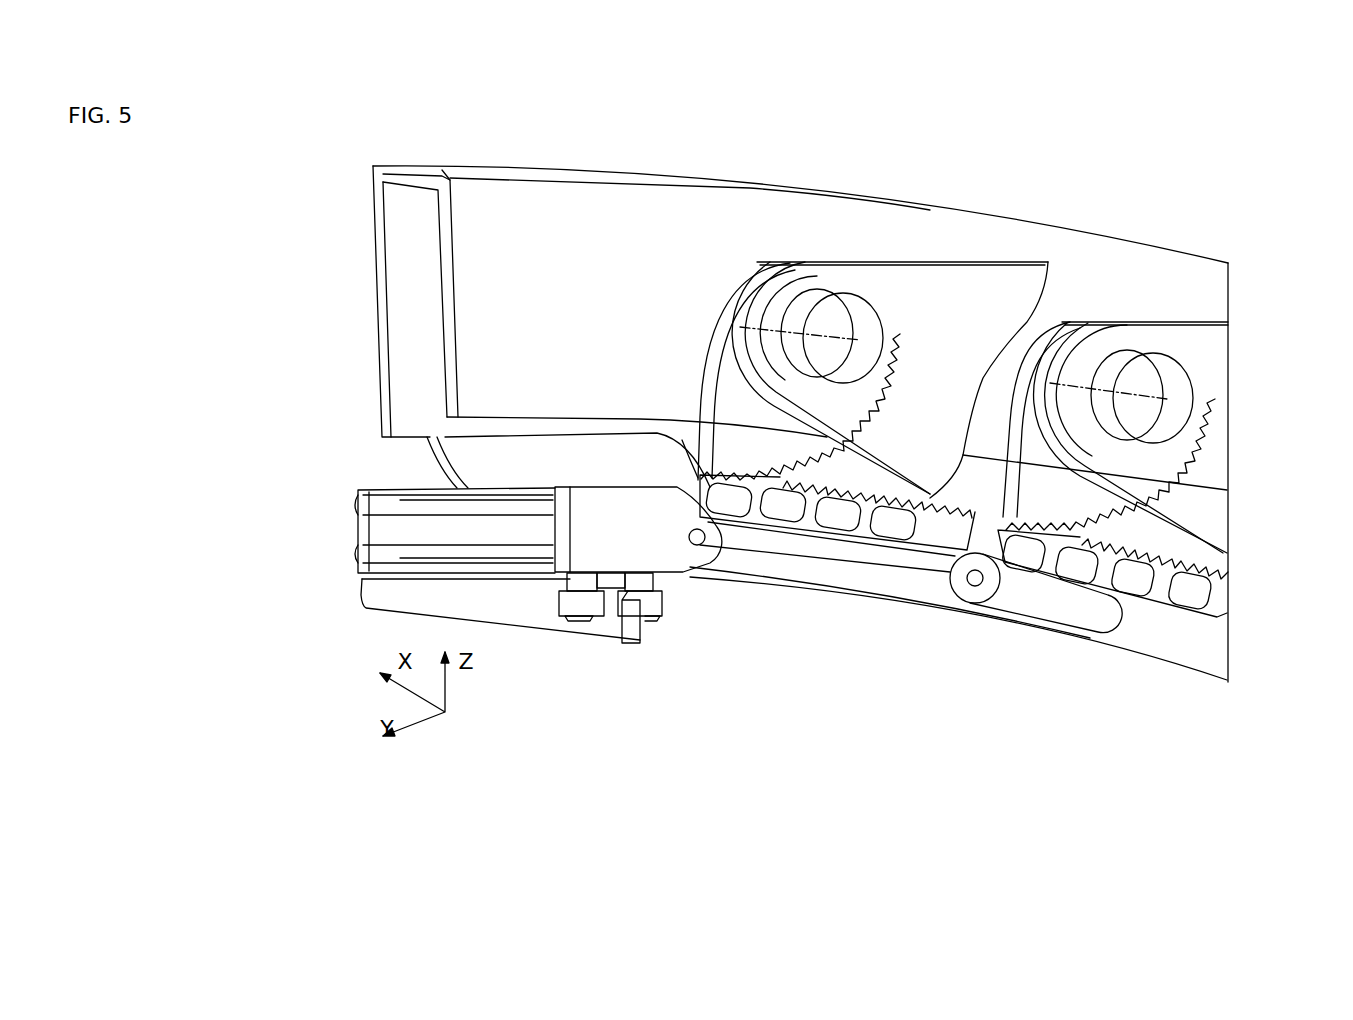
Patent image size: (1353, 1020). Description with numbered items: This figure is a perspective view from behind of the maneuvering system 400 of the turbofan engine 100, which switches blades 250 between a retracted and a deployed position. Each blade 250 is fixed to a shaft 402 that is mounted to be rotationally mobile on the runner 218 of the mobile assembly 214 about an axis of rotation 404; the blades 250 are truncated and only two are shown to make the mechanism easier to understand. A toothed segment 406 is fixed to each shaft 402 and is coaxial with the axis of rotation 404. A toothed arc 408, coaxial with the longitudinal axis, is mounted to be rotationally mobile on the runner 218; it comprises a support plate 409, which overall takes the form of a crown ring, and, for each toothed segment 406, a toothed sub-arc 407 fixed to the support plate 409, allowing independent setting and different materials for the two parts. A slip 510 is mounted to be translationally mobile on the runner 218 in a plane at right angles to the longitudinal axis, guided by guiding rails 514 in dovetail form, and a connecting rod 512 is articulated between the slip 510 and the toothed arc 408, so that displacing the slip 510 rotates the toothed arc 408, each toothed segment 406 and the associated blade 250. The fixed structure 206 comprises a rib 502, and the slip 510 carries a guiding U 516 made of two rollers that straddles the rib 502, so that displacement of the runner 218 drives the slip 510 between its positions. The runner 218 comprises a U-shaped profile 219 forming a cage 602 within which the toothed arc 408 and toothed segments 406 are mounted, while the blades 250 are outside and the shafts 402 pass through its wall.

The turbofan engine 100 is at (1224, 170).
The fixed structure 206 is at (398, 600).
The mobile assembly 214 is at (976, 152).
The runner 218 is at (1082, 153).
The U-shaped profile 219 is at (520, 193).
The blade 250 is at (1205, 360).
The maneuvering system 400 is at (812, 692).
The shaft 402 is at (1160, 423).
The axis of rotation 404 is at (1140, 372).
The toothed segment 406 is at (1062, 498).
The toothed sub-arc 407 is at (1228, 587).
The toothed arc 408 is at (915, 622).
The support plate 409 is at (686, 452).
The rib 502 is at (630, 627).
The slip 510 is at (638, 529).
The connecting rod 512 is at (827, 557).
The guiding rails 514 is at (357, 493).
The guiding U 516 is at (583, 607).
The cage 602 is at (395, 260).